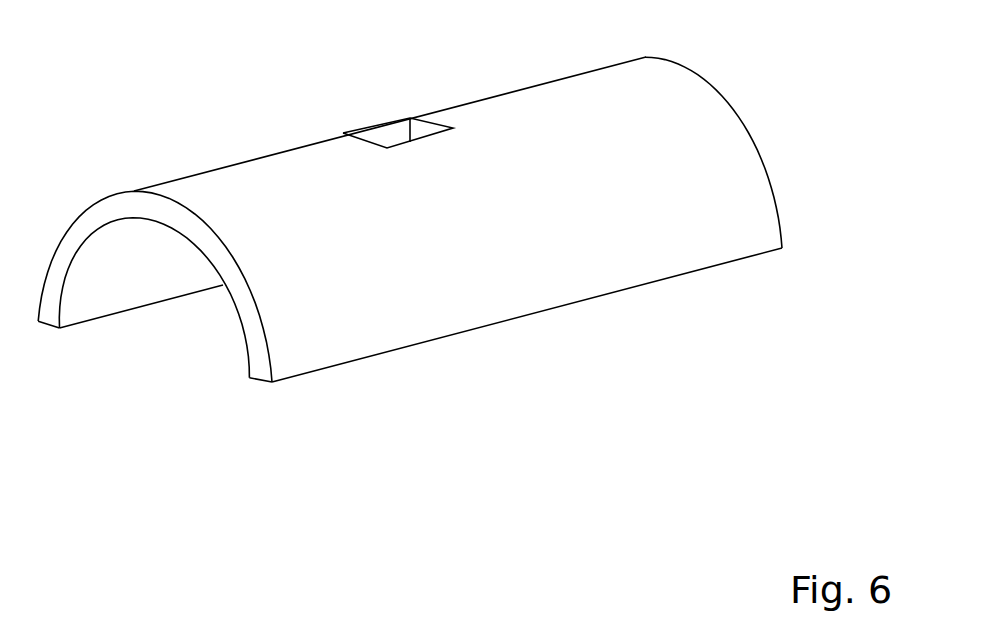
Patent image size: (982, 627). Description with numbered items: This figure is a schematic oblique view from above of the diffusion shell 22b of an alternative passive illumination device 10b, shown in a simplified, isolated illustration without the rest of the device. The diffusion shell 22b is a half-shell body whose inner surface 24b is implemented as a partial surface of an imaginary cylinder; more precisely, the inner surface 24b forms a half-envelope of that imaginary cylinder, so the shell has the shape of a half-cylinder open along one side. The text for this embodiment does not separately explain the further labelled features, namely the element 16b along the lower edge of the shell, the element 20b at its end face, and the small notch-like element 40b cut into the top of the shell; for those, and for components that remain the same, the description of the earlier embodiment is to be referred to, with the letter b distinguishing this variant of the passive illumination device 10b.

The passive illumination device 10b is at (410, 291).
The lower longitudinal edge 16b is at (421, 417).
The end face of shell 20b is at (610, 375).
The diffusion shell 22b is at (690, 225).
The inner surface 24b is at (138, 288).
The notch 40b is at (400, 133).